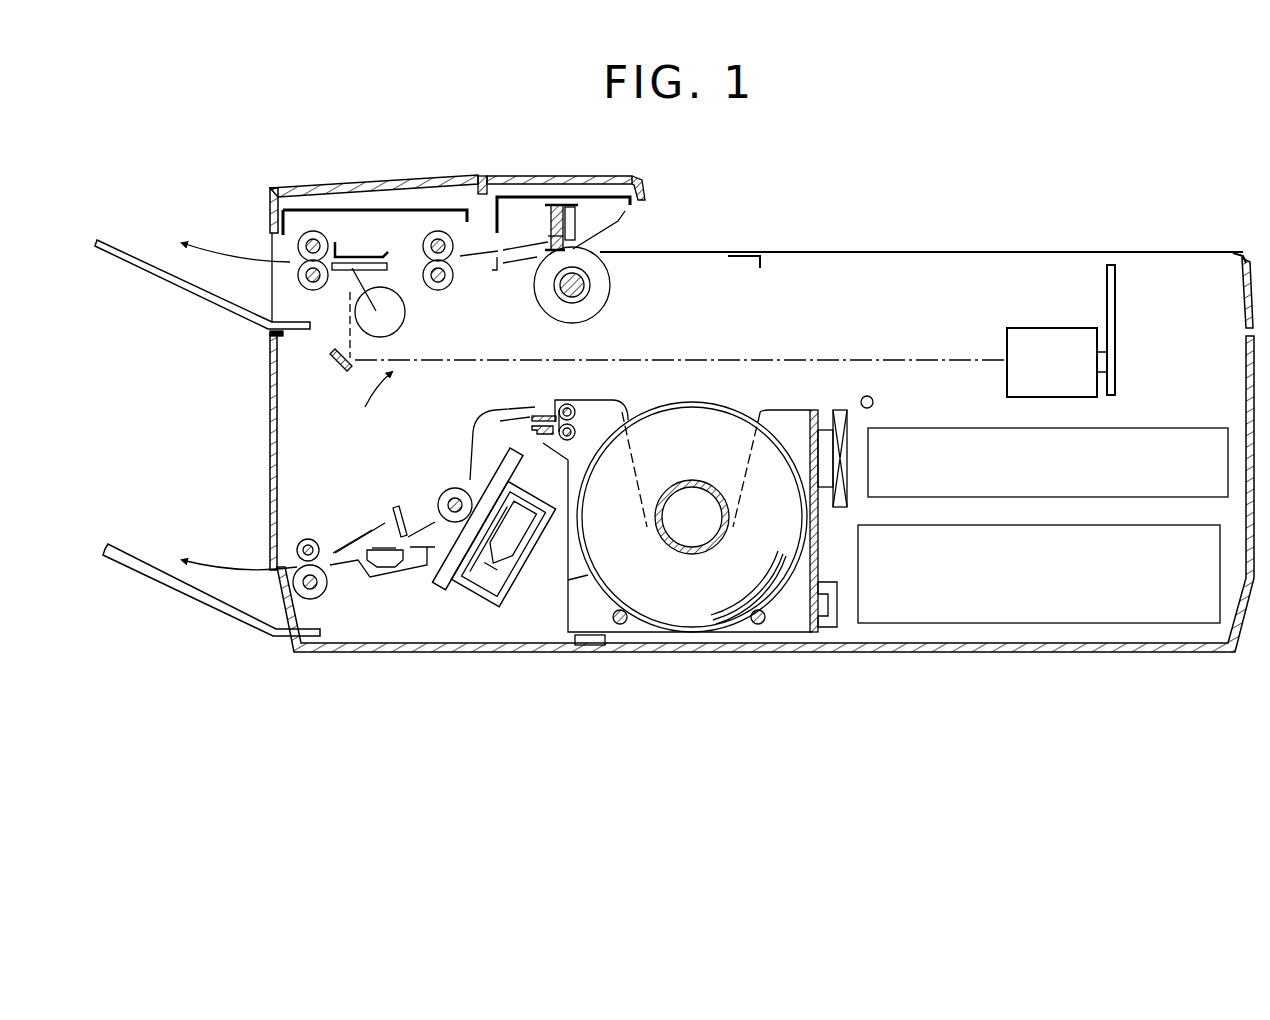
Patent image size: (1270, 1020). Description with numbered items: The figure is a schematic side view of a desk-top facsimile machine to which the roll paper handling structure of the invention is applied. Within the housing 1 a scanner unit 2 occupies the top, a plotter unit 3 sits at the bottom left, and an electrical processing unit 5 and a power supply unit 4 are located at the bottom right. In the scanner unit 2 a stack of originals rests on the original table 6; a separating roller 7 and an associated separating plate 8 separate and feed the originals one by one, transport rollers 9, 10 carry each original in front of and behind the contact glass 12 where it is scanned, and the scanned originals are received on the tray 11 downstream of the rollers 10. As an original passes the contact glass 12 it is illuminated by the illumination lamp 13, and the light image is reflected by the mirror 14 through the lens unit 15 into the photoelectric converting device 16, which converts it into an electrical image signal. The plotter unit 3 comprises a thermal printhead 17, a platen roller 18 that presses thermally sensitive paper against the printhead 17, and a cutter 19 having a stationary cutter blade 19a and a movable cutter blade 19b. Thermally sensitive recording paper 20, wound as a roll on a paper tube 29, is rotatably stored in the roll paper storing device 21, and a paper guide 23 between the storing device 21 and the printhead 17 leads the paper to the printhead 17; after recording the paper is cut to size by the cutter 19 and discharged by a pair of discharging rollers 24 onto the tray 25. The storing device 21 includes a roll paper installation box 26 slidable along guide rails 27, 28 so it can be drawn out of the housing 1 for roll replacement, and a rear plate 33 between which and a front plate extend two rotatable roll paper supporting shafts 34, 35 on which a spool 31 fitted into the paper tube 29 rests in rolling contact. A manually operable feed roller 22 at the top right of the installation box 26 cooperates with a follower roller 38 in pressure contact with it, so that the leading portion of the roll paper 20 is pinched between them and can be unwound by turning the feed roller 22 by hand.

The housing 1 is at (268, 396).
The scanner unit 2 is at (371, 403).
The plotter unit 3 is at (441, 620).
The power supply unit 4 is at (945, 612).
The electrical processing unit 5 is at (904, 438).
The original table 6 is at (720, 252).
The separating roller 7 is at (606, 297).
The separating plate 8 is at (546, 248).
The transport rollers 9 is at (450, 283).
The transport rollers 10 is at (298, 277).
The tray 11 is at (143, 272).
The contact glass 12 is at (386, 270).
The illumination lamp 13 is at (395, 318).
The mirror 14 is at (335, 363).
The lens unit 15 is at (1023, 336).
The photoelectric converting device 16 is at (1103, 362).
The thermal printhead 17 is at (506, 463).
The platen roller 18 is at (450, 492).
The cutter 19 is at (372, 512).
The stationary cutter blade 19a is at (403, 515).
The movable cutter blade 19b is at (385, 568).
The thermally sensitive recording paper 20 is at (676, 428).
The roll paper storing device 21 is at (748, 382).
The manually operable feed roller 22 is at (567, 410).
The paper guide 23 is at (478, 428).
The discharging rollers 24 is at (303, 532).
The tray 25 is at (124, 548).
The roll paper installation box 26 is at (781, 423).
The guide rail 27 is at (842, 408).
The guide rail 28 is at (825, 578).
The paper tube 29 is at (699, 482).
The spool 31 is at (590, 573).
The rear plate 33 is at (616, 410).
The roll paper supporting shaft 34 is at (758, 628).
The roll paper supporting shaft 35 is at (625, 628).
The follower roller 38 is at (574, 440).